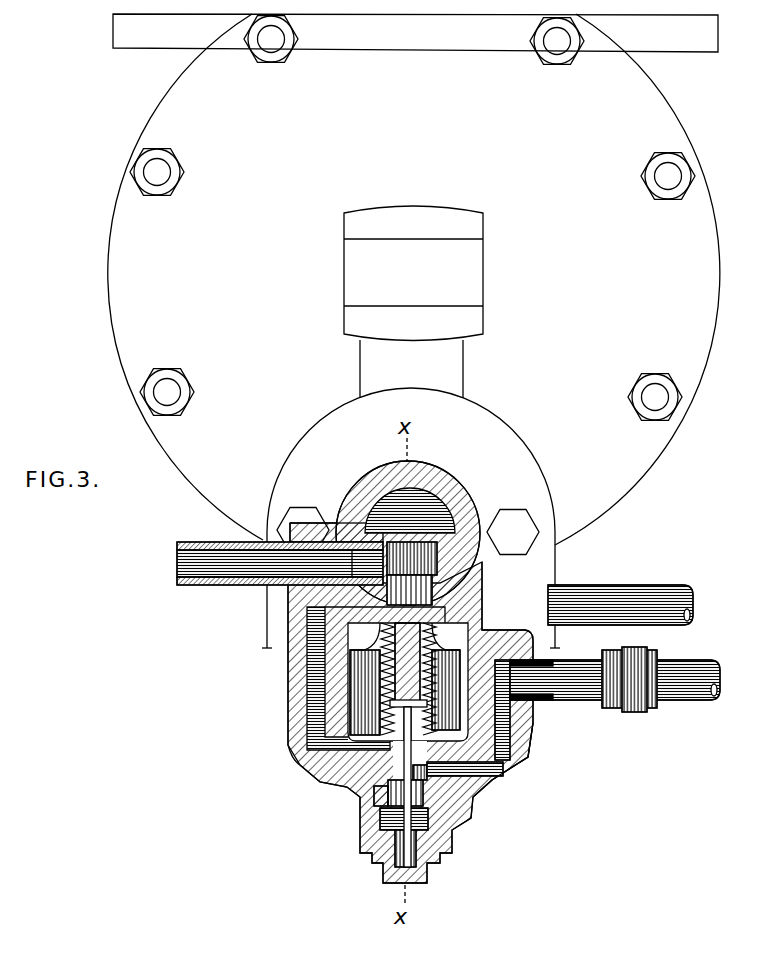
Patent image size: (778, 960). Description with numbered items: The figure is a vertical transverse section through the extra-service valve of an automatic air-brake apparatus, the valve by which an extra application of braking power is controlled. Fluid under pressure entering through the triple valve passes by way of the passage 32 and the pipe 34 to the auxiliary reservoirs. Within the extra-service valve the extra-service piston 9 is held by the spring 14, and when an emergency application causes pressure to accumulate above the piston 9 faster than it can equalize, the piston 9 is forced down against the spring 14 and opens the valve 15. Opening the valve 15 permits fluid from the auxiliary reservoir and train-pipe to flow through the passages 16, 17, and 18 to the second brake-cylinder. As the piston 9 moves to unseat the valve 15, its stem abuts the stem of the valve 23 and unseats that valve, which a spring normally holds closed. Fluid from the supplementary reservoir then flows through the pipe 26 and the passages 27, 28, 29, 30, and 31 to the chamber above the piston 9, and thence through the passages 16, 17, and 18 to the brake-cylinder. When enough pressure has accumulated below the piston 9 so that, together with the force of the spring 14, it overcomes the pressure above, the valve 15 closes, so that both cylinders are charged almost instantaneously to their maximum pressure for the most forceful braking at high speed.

The extra-service piston 9 is at (408, 550).
The spring 14 is at (422, 679).
The valve 15 is at (405, 677).
The passage 16 is at (445, 590).
The passage 17 is at (412, 558).
The passage 18 is at (280, 563).
The valve 23 is at (376, 797).
The pipe 26 is at (683, 701).
The passage 27 is at (493, 780).
The passage 28 is at (378, 825).
The passage 29 is at (420, 794).
The passage 30 is at (465, 769).
The passage 31 is at (312, 703).
The passage 32 is at (427, 760).
The pipe 34 is at (620, 605).